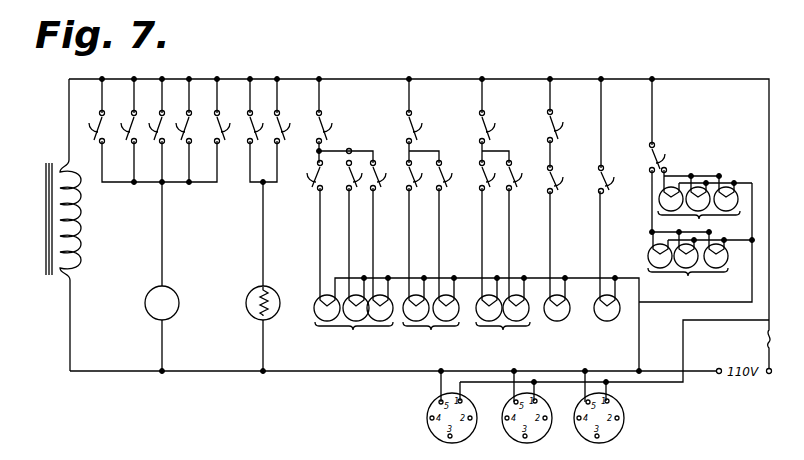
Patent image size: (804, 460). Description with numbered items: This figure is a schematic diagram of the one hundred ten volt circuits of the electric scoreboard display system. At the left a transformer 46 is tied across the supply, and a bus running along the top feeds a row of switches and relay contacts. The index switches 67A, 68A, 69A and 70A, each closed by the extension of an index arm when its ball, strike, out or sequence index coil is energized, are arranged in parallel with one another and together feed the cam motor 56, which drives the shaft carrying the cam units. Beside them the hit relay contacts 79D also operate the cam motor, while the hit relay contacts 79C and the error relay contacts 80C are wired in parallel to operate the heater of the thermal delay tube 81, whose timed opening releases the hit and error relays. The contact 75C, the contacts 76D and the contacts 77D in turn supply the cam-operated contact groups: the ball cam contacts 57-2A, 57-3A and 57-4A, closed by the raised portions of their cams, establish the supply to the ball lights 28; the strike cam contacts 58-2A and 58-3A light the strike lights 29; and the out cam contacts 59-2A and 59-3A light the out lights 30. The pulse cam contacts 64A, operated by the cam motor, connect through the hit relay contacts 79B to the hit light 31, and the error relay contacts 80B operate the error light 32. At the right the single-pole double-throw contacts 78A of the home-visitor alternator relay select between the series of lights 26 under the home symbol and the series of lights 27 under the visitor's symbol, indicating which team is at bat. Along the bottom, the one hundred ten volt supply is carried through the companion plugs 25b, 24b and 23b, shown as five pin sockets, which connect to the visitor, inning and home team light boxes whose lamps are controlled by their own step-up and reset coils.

The transformer 46 is at (58, 161).
The cam shaft motor 56 is at (145, 304).
The thermal delay tube 81 is at (248, 302).
The ball index switch 67A is at (89, 123).
The strike index switch 68A is at (121, 123).
The out index switch 69A is at (150, 123).
The sequence index switch 70A is at (178, 123).
The hit relay contact D 79D is at (231, 122).
The hit relay contact C 79C is at (264, 122).
The error relay contact C 80C is at (295, 122).
The relay contact 75C is at (338, 122).
The relay contact 76D is at (426, 122).
The relay contact 77D is at (500, 123).
The pulse cam contacts 64A is at (565, 122).
The home-visitor alternator relay contacts A 78A is at (656, 159).
The hit relay contact B 79B is at (567, 174).
The error relay contact B 80B is at (617, 174).
The ball cam contacts 57-2A is at (300, 181).
The ball cam contacts 57-3A is at (359, 160).
The ball cam contacts 57-4A is at (392, 170).
The strike cam contacts 58-2A is at (432, 161).
The strike cam contacts 58-3A is at (460, 174).
The out cam contacts 59-2A is at (503, 162).
The out cam contacts 59-3A is at (529, 171).
The home at-bat lights 26 is at (702, 200).
The visitor at-bat lights 27 is at (701, 261).
The ball lights 28 is at (353, 323).
The strike lights 29 is at (431, 323).
The out lights 30 is at (503, 323).
The hit light 31 is at (556, 321).
The error light 32 is at (607, 321).
The visitor light box plug 25b is at (428, 406).
The inning light box plug 24b is at (510, 437).
The home team light box plug 23b is at (591, 440).